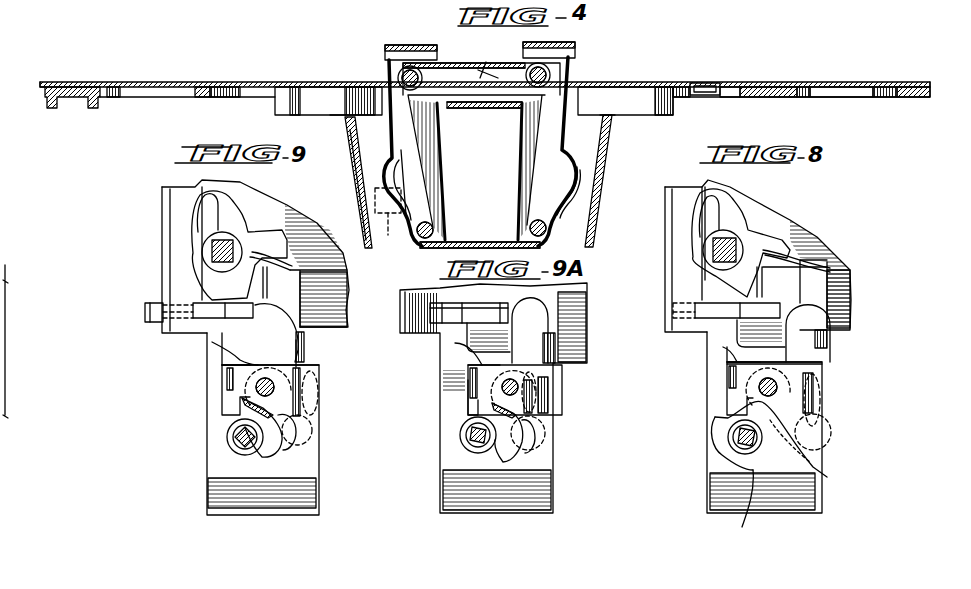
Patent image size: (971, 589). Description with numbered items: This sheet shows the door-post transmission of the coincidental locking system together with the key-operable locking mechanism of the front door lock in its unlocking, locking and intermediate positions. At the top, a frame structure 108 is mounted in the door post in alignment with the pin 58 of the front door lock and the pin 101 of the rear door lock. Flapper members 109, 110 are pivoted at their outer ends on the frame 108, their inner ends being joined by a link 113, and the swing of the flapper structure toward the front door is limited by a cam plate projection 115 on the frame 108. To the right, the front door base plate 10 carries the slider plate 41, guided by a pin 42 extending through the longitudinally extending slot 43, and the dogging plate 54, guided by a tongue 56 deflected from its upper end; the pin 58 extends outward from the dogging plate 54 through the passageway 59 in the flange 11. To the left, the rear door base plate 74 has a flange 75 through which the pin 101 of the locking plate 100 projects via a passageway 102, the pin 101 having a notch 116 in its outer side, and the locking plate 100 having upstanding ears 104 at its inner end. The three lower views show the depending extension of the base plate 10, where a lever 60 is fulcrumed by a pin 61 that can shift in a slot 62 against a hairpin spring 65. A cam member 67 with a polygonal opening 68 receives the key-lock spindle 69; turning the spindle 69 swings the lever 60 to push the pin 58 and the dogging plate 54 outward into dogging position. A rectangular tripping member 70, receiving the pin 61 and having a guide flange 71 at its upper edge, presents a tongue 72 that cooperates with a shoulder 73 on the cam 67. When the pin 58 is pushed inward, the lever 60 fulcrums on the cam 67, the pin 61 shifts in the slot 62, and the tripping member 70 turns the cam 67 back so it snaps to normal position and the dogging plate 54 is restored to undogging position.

In FIG. 4, the base plate 10 is at (841, 83).
In FIG. 4, the flange 11 is at (612, 216).
In FIG. 4, the slider plate 41 is at (778, 97).
In FIG. 4, the pin 42 is at (893, 97).
In FIG. 4, the longitudinally extending slot 43 is at (860, 97).
In FIG. 9, the dogging plate 54 is at (302, 296).
In FIG. 9A, the dogging plate 54 is at (560, 308).
In FIG. 8, the dogging plate 54 is at (817, 303).
In FIG. 4, the tongue 56 is at (706, 88).
In FIG. 4, the pin 58 is at (598, 95).
In FIG. 9, the pin 58 is at (156, 308).
In FIG. 9A, the pin 58 is at (432, 306).
In FIG. 8, the pin 58 is at (697, 298).
In FIG. 4, the passageway 59 is at (612, 116).
In FIG. 9, the lever 60 is at (302, 337).
In FIG. 9A, the lever 60 is at (552, 340).
In FIG. 8, the lever 60 is at (828, 340).
In FIG. 9, the pin 61 is at (254, 384).
In FIG. 9A, the pin 61 is at (501, 390).
In FIG. 8, the pin 61 is at (758, 388).
In FIG. 9, the slot 62 is at (317, 365).
In FIG. 9A, the slot 62 is at (565, 362).
In FIG. 8, the slot 62 is at (823, 368).
In FIG. 9, the hairpin spring 65 is at (322, 396).
In FIG. 9A, the hairpin spring 65 is at (556, 396).
In FIG. 8, the hairpin spring 65 is at (823, 402).
In FIG. 9, the cam member 67 is at (267, 456).
In FIG. 9A, the cam member 67 is at (503, 464).
In FIG. 8, the cam member 67 is at (718, 436).
In FIG. 9, the polygonal opening 68 is at (237, 440).
In FIG. 9A, the polygonal opening 68 is at (468, 445).
In FIG. 8, the polygonal opening 68 is at (742, 434).
In FIG. 9, the spindle 69 is at (228, 432).
In FIG. 9A, the spindle 69 is at (462, 437).
In FIG. 8, the spindle 69 is at (732, 440).
In FIG. 9, the tripping member 70 is at (220, 359).
In FIG. 9A, the tripping member 70 is at (468, 358).
In FIG. 8, the tripping member 70 is at (734, 383).
In FIG. 9, the guide flange 71 is at (217, 352).
In FIG. 9A, the guide flange 71 is at (455, 345).
In FIG. 8, the guide flange 71 is at (723, 346).
In FIG. 9, the tongue 72 is at (230, 407).
In FIG. 9A, the tongue 72 is at (470, 408).
In FIG. 8, the tongue 72 is at (738, 408).
In FIG. 8, the shoulder 73 is at (752, 505).
In FIG. 4, the base plate 74 is at (252, 82).
In FIG. 4, the flange 75 is at (352, 197).
In FIG. 4, the locking plate 100 is at (197, 97).
In FIG. 4, the pin 101 is at (364, 84).
In FIG. 4, the passageway 102 is at (354, 118).
In FIG. 4, the upstanding ears 104 is at (92, 108).
In FIG. 4, the frame structure 108 is at (567, 60).
In FIG. 4, the flapper member 109 is at (547, 226).
In FIG. 4, the flapper member 110 is at (422, 213).
In FIG. 4, the link 113 is at (492, 60).
In FIG. 4, the cam plate projection 115 is at (568, 196).
In FIG. 4, the notch 116 is at (337, 115).